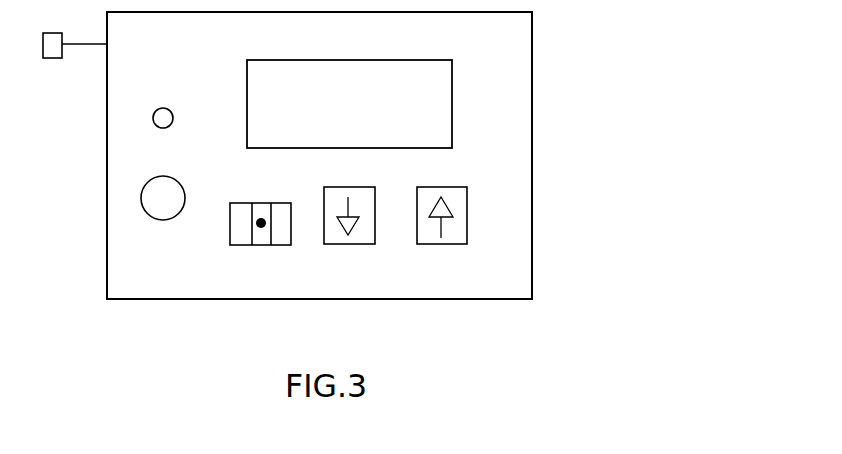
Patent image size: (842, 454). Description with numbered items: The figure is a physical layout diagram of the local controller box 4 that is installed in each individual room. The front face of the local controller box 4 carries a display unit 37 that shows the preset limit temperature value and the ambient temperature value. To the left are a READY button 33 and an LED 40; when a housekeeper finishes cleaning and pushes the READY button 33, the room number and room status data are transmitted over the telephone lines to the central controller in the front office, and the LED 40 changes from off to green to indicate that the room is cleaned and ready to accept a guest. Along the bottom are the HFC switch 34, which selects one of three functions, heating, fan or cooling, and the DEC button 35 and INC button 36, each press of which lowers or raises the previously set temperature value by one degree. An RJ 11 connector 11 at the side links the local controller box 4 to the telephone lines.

The local controller box 4 is at (554, 186).
The RJ 11 connector 11 is at (70, 59).
The LED 40 is at (153, 118).
The ready button 33 is at (141, 198).
The display 37 is at (453, 78).
The HFC switch 34 is at (258, 250).
The DEC button 35 is at (352, 250).
The INC button 36 is at (440, 250).